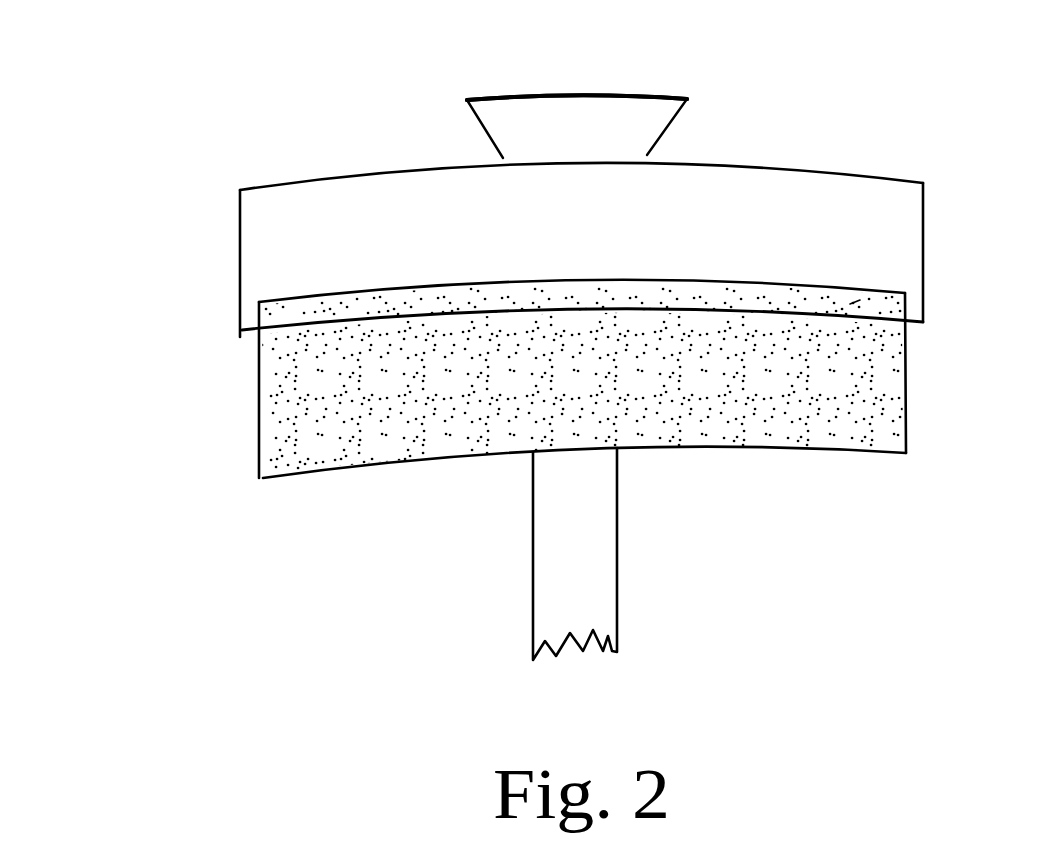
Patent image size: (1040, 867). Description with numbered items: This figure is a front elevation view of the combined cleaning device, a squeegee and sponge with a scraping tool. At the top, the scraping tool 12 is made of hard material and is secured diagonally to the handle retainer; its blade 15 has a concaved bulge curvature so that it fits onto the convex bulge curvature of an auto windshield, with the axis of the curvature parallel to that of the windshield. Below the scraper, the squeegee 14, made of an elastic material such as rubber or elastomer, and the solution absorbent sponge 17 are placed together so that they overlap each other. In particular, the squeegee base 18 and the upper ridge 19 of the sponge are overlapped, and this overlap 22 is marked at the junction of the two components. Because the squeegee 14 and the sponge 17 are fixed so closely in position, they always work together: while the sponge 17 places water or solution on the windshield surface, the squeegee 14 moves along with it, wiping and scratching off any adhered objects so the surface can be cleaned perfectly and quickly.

The scraping tool 12 is at (632, 130).
The squeegee 14 is at (309, 224).
The blade 15 is at (504, 97).
The solution absorbent sponge 17 is at (390, 423).
The squeegee base 18 is at (262, 329).
The upper ridge 19 is at (280, 313).
The overlap 22 is at (850, 304).